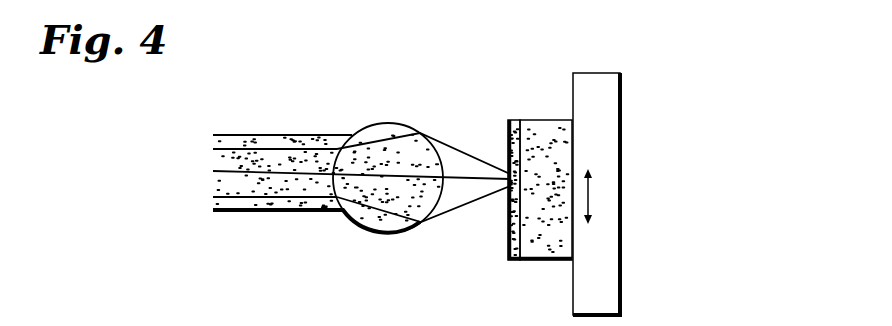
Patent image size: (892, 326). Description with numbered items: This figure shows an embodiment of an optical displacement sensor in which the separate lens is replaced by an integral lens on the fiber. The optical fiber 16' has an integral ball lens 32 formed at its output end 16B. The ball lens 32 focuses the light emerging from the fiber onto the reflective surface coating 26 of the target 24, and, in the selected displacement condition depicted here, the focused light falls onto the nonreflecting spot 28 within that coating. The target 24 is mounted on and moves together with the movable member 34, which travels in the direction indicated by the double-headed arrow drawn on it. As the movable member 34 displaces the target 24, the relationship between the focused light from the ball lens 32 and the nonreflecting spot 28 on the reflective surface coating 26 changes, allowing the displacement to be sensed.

The optical fiber 16' is at (282, 131).
The output end 16B is at (348, 220).
The ball lens 32 is at (377, 122).
The nonreflecting spot 28 is at (508, 187).
The reflective surface coating 26 is at (507, 131).
The target 24 is at (528, 121).
The movable member 34 is at (630, 76).